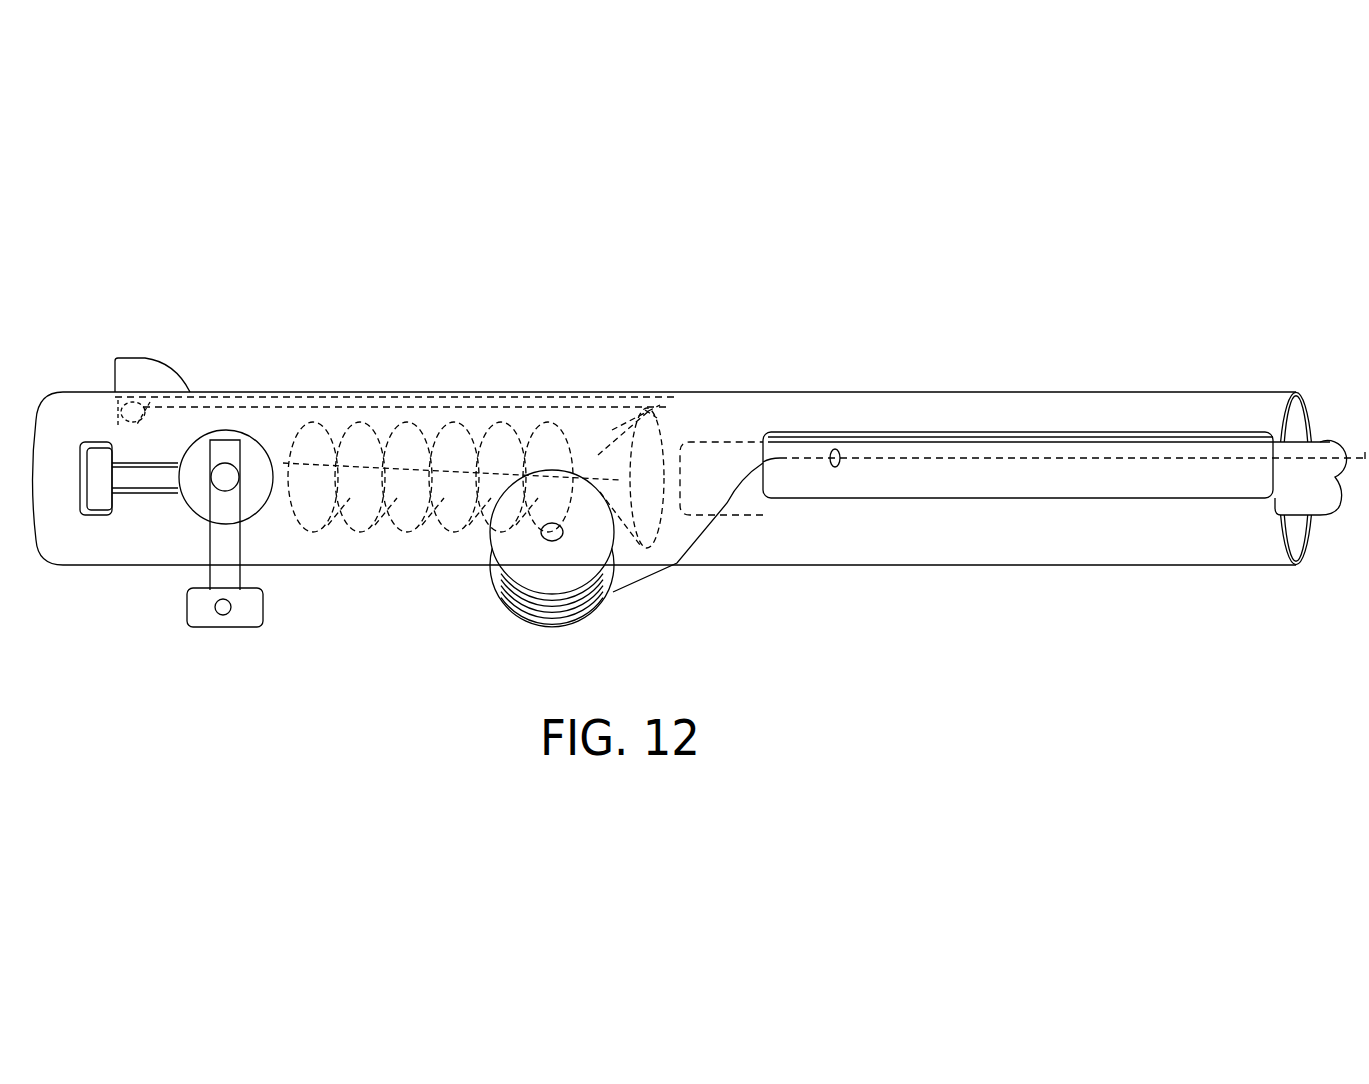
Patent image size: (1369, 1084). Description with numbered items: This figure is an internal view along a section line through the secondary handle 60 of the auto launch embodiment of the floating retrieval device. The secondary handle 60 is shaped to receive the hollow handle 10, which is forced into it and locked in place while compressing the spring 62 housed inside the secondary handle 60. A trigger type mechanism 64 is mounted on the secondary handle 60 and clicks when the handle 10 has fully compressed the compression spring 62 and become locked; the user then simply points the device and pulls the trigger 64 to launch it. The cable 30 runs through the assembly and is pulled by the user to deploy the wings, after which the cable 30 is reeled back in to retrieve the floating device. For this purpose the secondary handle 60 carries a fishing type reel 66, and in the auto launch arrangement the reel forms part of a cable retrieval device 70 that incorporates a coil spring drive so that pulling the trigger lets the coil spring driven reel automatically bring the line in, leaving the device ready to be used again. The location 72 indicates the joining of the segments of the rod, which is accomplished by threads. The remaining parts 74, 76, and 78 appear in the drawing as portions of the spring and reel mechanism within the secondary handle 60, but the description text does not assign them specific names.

The handle 10 is at (947, 447).
The cable 30 is at (1148, 458).
The secondary handle 60 is at (1068, 624).
The spring 62 is at (510, 387).
The trigger type mechanism 64 is at (155, 370).
The fishing type reel 66 is at (523, 605).
The cable retrieval device 70 is at (384, 357).
The joining of the segments of the rod 72 is at (247, 437).
The cone 74 is at (667, 462).
The base 76 is at (245, 605).
The plunger head 78 is at (137, 477).